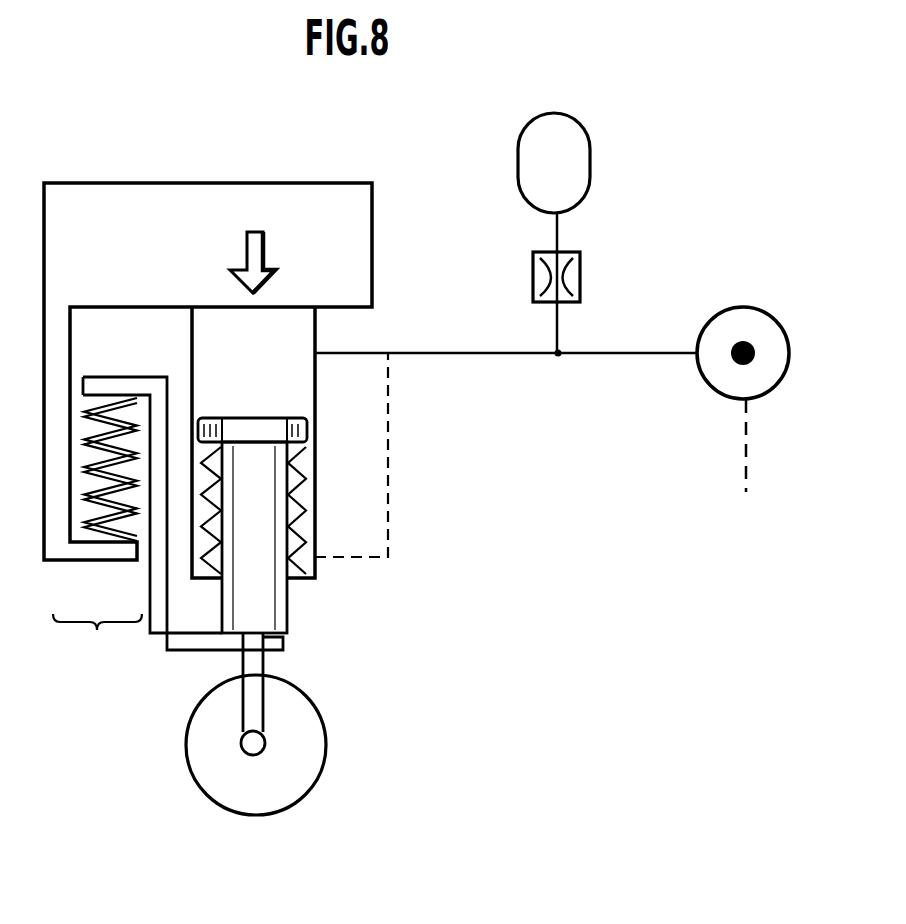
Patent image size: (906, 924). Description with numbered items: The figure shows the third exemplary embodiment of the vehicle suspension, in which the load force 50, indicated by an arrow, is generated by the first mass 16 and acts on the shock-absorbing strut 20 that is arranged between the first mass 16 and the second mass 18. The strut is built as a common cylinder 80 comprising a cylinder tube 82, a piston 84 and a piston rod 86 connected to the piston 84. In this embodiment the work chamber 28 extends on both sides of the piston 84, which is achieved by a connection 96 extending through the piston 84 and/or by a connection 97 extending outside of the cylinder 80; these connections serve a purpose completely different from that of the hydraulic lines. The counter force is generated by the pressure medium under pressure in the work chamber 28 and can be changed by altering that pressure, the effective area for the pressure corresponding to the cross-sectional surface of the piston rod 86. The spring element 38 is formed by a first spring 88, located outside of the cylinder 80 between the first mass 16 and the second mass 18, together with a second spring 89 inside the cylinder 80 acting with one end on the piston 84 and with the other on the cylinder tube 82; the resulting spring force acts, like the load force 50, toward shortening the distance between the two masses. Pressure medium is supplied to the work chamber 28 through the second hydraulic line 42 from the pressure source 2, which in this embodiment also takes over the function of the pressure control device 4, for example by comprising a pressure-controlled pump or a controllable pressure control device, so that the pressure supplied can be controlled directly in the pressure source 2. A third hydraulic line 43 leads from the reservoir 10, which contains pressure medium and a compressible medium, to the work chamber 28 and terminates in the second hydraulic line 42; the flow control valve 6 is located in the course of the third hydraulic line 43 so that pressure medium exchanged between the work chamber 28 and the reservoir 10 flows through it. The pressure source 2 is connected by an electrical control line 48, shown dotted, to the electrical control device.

The pressure source 2 is at (773, 315).
The pressure control device 4 is at (730, 310).
The flow control valve 6 is at (578, 256).
The reservoir 10 is at (568, 132).
The first mass 16 is at (122, 203).
The second mass 18 is at (318, 797).
The shock-absorbing strut 20 is at (308, 650).
The work chamber 28 is at (255, 348).
The spring element 38 is at (97, 646).
The second hydraulic line 42 is at (608, 355).
The third hydraulic line 43 is at (558, 330).
The electrical control line 48 is at (745, 453).
The load force 50 is at (260, 250).
The cylinder 80 is at (322, 387).
The cylinder tube 82 is at (315, 498).
The piston 84 is at (293, 428).
The piston rod 86 is at (263, 602).
The first spring 88 is at (86, 533).
The second spring 89 is at (200, 547).
The connection 96 is at (217, 418).
The connection 97 is at (390, 487).